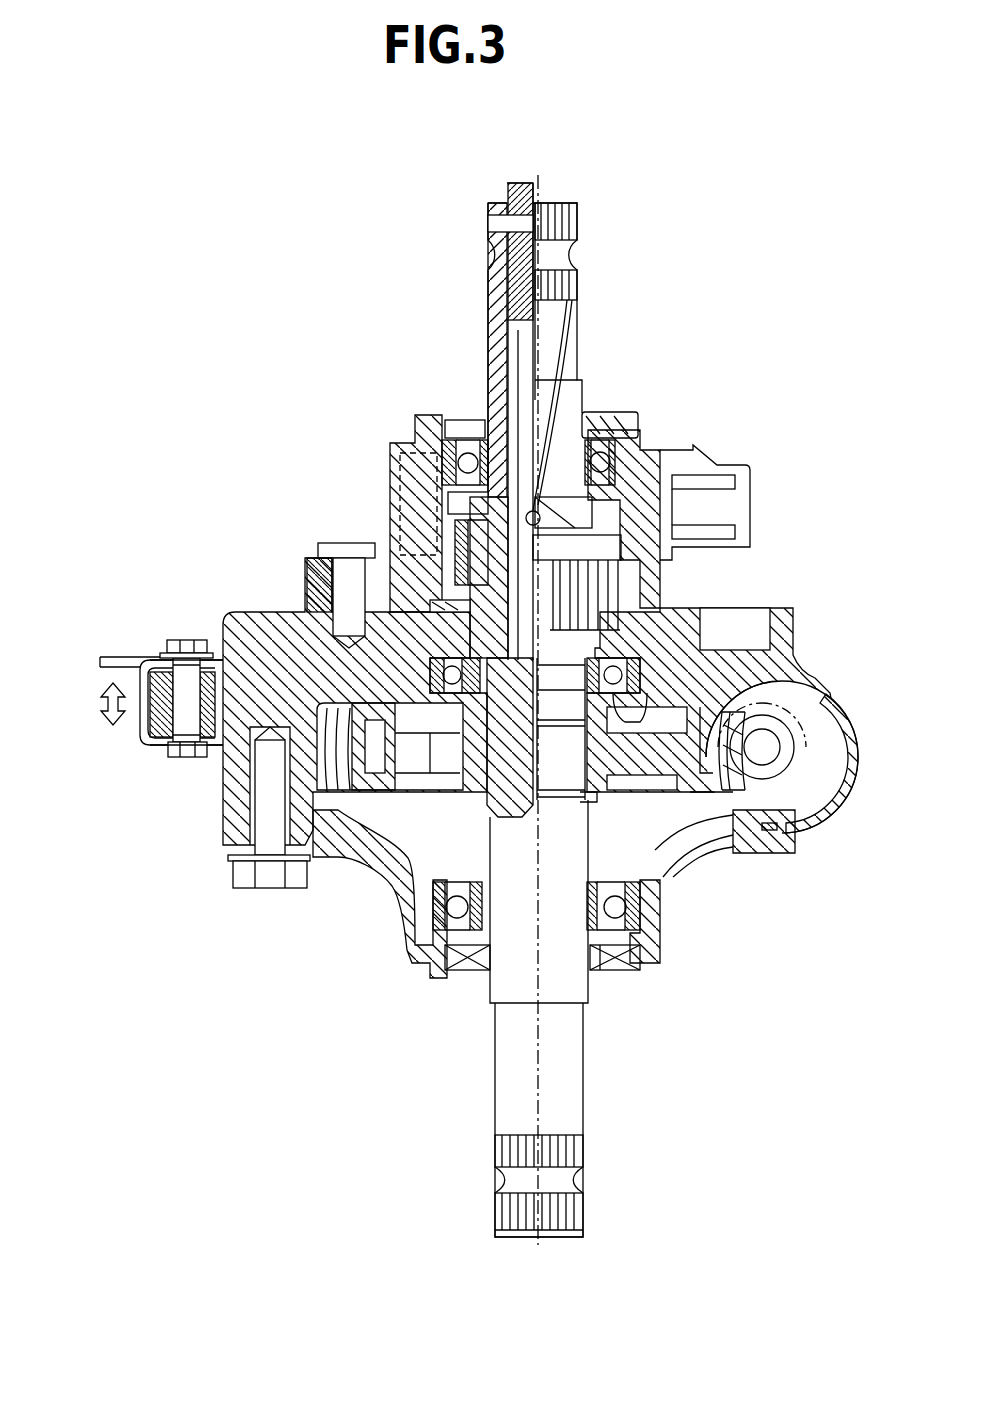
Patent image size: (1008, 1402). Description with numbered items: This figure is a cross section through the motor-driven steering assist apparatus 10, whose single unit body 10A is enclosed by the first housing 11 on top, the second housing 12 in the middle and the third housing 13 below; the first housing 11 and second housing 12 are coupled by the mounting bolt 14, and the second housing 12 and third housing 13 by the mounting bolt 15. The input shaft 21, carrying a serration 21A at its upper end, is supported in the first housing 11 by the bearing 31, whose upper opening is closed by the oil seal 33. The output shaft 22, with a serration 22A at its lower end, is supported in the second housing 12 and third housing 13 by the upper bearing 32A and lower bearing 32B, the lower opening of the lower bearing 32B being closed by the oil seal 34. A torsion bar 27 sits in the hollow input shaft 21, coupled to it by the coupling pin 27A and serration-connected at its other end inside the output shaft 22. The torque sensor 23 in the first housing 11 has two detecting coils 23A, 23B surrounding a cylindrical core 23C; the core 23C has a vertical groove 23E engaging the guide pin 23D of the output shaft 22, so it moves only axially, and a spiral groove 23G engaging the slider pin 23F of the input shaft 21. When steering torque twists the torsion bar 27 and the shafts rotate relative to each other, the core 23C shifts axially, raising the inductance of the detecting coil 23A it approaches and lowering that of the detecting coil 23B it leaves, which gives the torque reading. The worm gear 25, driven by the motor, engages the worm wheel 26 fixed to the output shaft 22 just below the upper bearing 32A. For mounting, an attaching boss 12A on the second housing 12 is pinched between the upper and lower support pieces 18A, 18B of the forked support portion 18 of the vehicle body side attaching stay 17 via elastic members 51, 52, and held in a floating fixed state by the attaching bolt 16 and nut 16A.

The motor-driven steering assist apparatus 10 is at (320, 312).
The unit body 10A is at (799, 582).
The first housing 11 is at (390, 462).
The second housing 12 is at (222, 822).
The attaching boss 12A is at (135, 680).
The third housing 13 is at (388, 887).
The mounting bolt 14 is at (330, 550).
The mounting bolt 15 is at (242, 877).
The attaching bolt 16 is at (180, 650).
The nut 16A is at (186, 760).
The vehicle body side attaching stay 17 is at (140, 662).
The forked support portion 18 is at (143, 733).
The upper support piece 18A is at (160, 660).
The lower support piece 18B is at (165, 748).
The input shaft 21 is at (492, 297).
The serration 21A is at (565, 224).
The output shaft 22 is at (510, 1095).
The serration 22A is at (510, 1212).
The torque sensor 23 is at (426, 463).
The detecting coil 23A is at (432, 497).
The detecting coil 23B is at (330, 570).
The cylindrical core 23C is at (426, 535).
The guide pin 23D is at (540, 612).
The vertical groove 23E is at (455, 606).
The slider pin 23F is at (553, 420).
The spiral groove 23G is at (540, 511).
The worm gear 25 is at (830, 692).
The worm wheel 26 is at (717, 792).
The torsion bar 27 is at (528, 186).
The coupling pin 27A is at (500, 224).
The bearing 31 is at (660, 447).
The upper bearing 32A is at (718, 672).
The lower bearing 32B is at (617, 907).
The oil seal 33 is at (632, 416).
The oil seal 34 is at (605, 975).
The elastic member 51 is at (198, 650).
The elastic member 52 is at (162, 742).